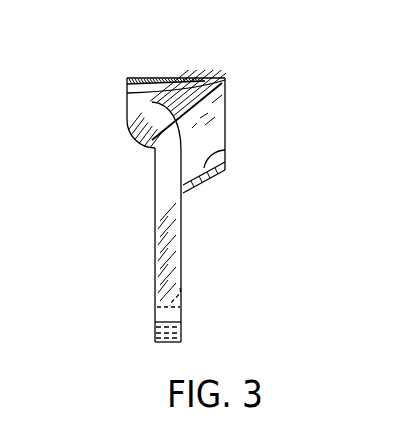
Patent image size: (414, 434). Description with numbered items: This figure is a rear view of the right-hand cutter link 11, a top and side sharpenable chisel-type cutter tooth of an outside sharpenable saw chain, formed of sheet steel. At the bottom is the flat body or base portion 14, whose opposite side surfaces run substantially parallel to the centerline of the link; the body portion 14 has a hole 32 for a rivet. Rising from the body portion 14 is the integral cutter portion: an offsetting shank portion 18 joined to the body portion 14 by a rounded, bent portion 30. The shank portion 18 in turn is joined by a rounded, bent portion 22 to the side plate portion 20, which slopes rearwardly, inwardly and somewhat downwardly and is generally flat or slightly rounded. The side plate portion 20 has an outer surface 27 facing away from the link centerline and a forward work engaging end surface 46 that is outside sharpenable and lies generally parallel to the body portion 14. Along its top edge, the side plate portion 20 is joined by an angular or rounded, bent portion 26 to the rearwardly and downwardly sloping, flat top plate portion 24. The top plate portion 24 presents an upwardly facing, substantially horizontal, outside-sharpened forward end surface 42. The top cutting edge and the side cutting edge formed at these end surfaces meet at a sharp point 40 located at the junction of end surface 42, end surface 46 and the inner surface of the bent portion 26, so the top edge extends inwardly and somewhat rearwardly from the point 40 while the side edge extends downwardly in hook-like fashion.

The cutter link 11 is at (128, 63).
The body portion 14 is at (155, 228).
The shank portion 18 is at (185, 192).
The side plate portion 20 is at (153, 147).
The bent portion 22 is at (225, 150).
The top plate portion 24 is at (145, 100).
The bent portion 26 is at (180, 103).
The outer surface 27 is at (213, 130).
The bent portion 30 is at (189, 200).
The hole 32 is at (180, 288).
The point 40 is at (226, 79).
The end surface 42 is at (162, 78).
The end surface 46 is at (227, 102).